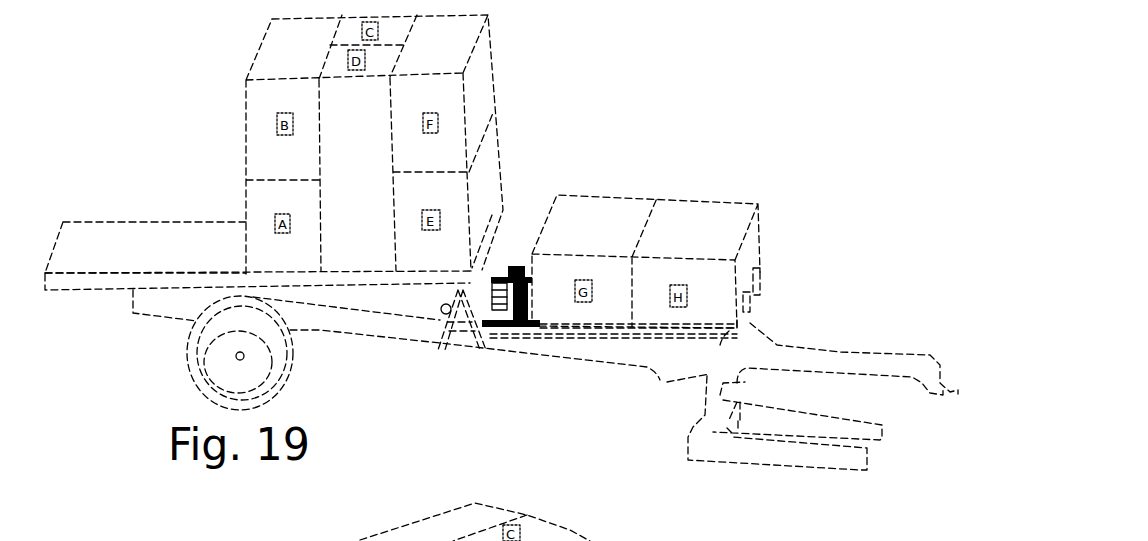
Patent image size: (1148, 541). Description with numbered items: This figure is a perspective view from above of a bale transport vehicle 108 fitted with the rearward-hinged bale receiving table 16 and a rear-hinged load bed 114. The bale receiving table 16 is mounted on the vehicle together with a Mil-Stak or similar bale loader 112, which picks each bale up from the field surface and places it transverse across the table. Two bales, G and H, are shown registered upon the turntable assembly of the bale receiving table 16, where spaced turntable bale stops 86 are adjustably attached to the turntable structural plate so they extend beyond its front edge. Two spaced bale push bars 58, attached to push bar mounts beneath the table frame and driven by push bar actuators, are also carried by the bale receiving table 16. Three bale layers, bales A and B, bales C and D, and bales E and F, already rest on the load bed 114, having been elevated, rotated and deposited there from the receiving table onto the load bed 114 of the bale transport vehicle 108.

The load bed 114 is at (202, 221).
The bale receiving table 16 is at (514, 250).
The bale push bars 58 is at (526, 250).
The turntable bale stops 86 is at (760, 279).
The bale transport vehicle 108 is at (843, 350).
The bale loader 112 is at (782, 468).